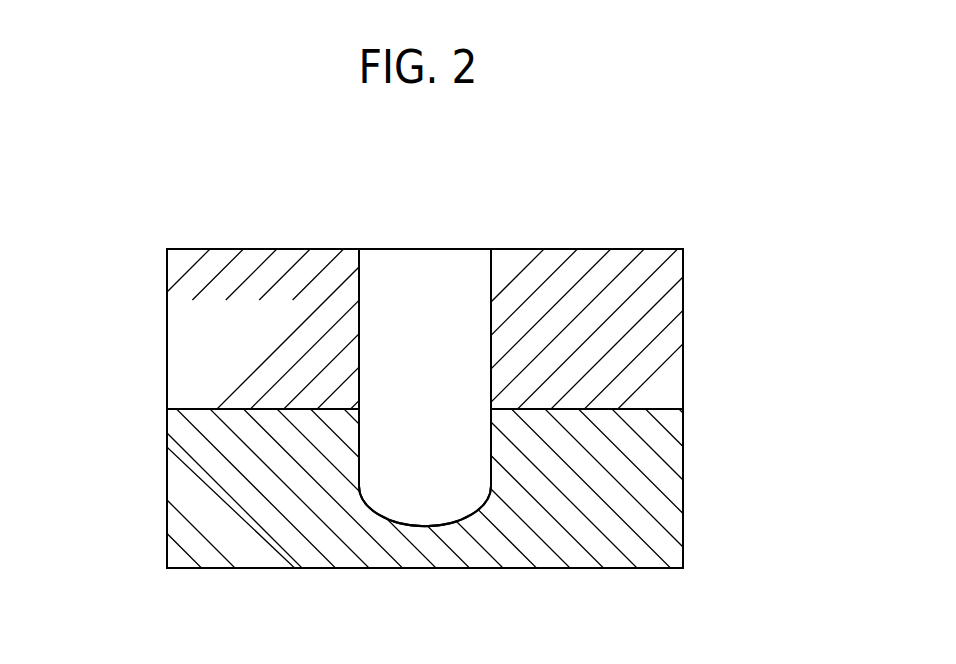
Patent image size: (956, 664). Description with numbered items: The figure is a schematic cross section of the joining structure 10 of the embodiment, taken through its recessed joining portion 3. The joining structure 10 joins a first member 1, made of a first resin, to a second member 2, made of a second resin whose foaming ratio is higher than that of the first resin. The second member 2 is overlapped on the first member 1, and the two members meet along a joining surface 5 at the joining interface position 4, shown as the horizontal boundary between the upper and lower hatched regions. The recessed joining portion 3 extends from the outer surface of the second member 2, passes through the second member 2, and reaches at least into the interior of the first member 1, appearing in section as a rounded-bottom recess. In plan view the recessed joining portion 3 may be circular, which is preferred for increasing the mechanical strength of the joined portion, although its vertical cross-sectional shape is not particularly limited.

The joining structure 10 is at (718, 173).
The first member 1 is at (180, 495).
The second member 2 is at (180, 329).
The recessed joining portion 3 is at (428, 288).
The joining interface position 4 is at (683, 410).
The joining surface 5 is at (597, 409).